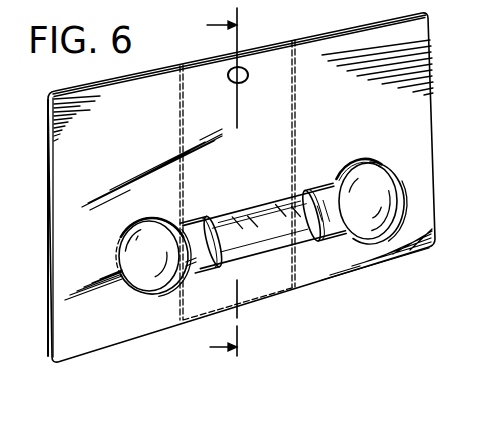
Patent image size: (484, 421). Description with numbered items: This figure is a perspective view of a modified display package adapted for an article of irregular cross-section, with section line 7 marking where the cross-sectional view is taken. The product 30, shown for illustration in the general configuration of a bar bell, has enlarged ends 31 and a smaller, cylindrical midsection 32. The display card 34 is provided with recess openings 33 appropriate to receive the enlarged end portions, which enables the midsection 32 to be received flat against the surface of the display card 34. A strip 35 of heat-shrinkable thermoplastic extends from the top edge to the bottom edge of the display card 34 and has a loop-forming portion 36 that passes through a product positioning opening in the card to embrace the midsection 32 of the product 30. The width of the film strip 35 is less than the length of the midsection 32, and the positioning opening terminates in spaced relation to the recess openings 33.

The section line 7- 7 is at (217, 185).
The product 30 is at (367, 152).
The enlarged ends 31 is at (131, 278).
The midsection 32 is at (342, 228).
The recess openings 33 is at (352, 166).
The display card 34 is at (430, 97).
The strip 35 is at (296, 106).
The loop-forming portion 36 is at (268, 218).